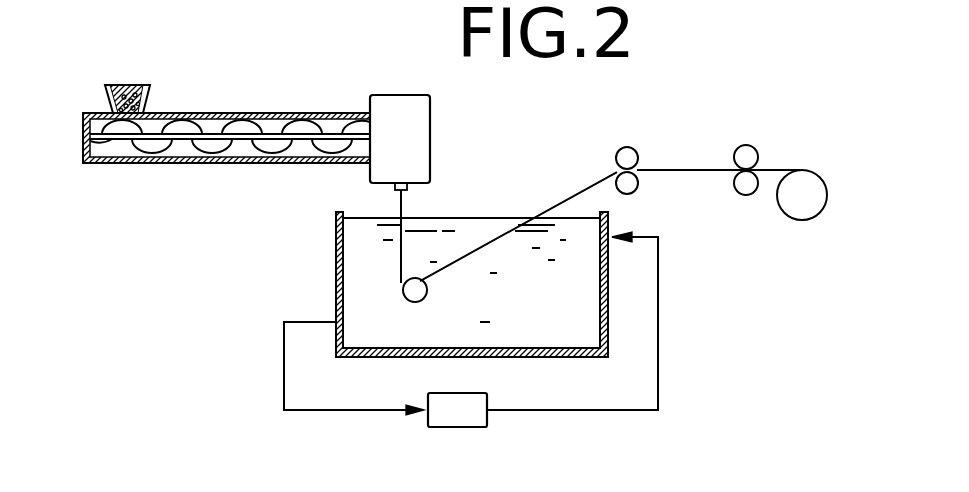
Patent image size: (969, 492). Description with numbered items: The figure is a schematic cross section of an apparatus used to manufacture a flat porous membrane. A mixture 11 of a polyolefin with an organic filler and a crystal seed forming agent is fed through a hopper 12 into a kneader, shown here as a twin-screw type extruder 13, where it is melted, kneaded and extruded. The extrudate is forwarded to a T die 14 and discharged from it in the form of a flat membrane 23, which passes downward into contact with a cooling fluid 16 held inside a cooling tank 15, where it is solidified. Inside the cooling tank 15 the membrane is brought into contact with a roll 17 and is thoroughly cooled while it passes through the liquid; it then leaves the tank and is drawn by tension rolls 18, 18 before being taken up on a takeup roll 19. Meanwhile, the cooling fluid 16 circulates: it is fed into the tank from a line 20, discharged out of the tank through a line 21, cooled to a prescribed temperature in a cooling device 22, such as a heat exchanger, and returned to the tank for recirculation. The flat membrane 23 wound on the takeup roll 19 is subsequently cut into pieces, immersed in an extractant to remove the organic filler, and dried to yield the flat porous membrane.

The mixture 11 is at (131, 92).
The hopper 12 is at (107, 92).
The twin-screw type extruder 13 is at (212, 145).
The T die 14 is at (413, 147).
The cooling tank 15 is at (336, 262).
The cooling fluid 16 is at (578, 313).
The roll 17 is at (412, 297).
The tension rolls 18 is at (627, 148).
The takeup roll 19 is at (805, 205).
The line 20 is at (658, 325).
The line 21 is at (284, 380).
The cooling device 22 is at (462, 415).
The flat membrane 23 is at (562, 206).